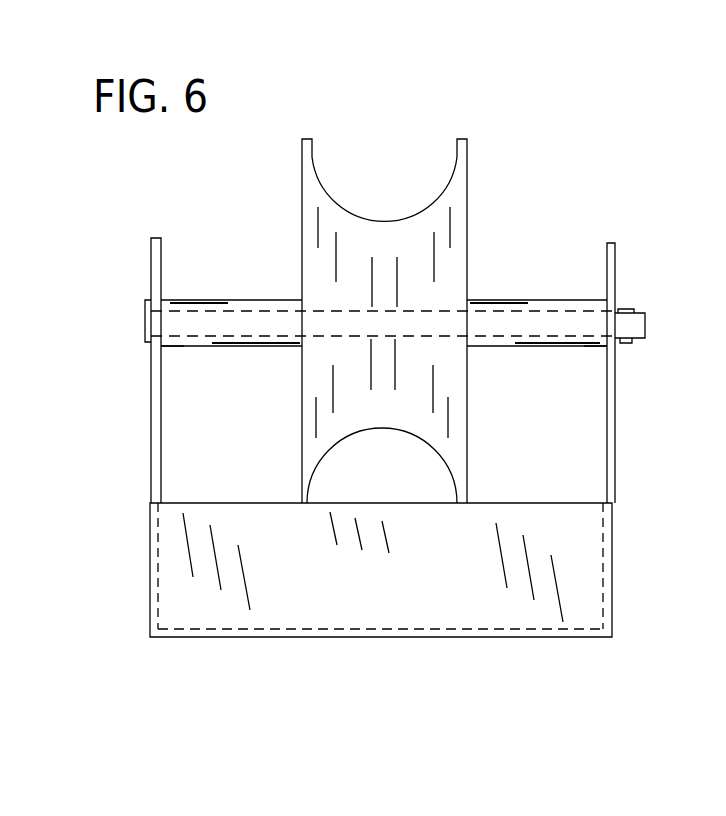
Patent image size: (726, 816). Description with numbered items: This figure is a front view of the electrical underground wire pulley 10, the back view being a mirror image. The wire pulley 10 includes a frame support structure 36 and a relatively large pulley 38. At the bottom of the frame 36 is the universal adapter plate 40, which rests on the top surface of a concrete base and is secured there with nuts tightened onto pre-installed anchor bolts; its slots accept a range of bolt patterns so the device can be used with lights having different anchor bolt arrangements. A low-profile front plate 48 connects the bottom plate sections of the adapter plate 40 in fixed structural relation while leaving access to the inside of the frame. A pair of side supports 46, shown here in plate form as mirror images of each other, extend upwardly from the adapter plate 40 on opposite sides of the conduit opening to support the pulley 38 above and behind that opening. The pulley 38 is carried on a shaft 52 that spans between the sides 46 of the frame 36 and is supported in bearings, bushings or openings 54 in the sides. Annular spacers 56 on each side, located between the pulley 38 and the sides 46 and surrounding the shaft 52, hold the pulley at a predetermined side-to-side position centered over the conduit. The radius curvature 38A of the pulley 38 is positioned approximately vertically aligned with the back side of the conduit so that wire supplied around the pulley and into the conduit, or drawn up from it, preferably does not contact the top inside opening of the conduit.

The electrical underground wire pulley 10 is at (203, 177).
The frame support structure 36 is at (614, 517).
The pulley 38 is at (469, 162).
The radius curvature 38A is at (314, 160).
The bottom universal adapter plate 40 is at (280, 631).
The side supports 46 is at (150, 614).
The front plate 48 is at (417, 612).
The shaft 52 is at (252, 310).
The bearings, bushings or openings 54 is at (155, 305).
The annular spacers 56 is at (182, 348).